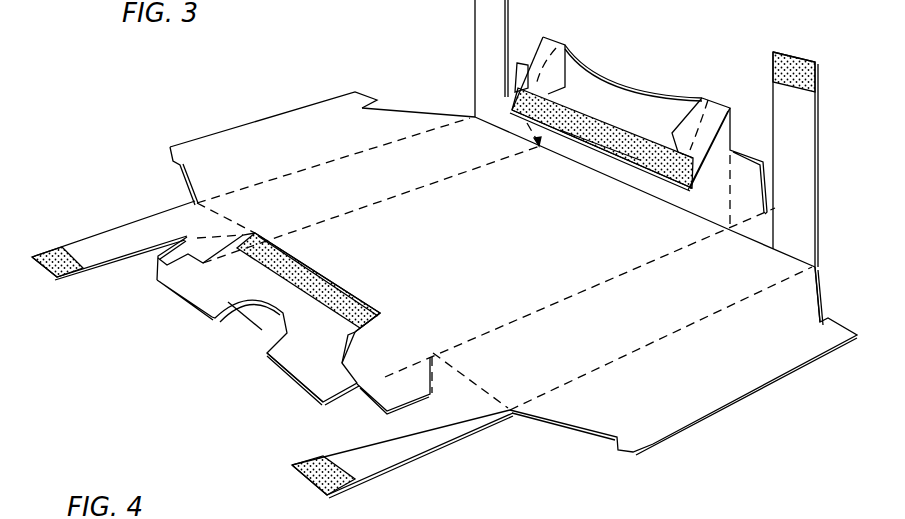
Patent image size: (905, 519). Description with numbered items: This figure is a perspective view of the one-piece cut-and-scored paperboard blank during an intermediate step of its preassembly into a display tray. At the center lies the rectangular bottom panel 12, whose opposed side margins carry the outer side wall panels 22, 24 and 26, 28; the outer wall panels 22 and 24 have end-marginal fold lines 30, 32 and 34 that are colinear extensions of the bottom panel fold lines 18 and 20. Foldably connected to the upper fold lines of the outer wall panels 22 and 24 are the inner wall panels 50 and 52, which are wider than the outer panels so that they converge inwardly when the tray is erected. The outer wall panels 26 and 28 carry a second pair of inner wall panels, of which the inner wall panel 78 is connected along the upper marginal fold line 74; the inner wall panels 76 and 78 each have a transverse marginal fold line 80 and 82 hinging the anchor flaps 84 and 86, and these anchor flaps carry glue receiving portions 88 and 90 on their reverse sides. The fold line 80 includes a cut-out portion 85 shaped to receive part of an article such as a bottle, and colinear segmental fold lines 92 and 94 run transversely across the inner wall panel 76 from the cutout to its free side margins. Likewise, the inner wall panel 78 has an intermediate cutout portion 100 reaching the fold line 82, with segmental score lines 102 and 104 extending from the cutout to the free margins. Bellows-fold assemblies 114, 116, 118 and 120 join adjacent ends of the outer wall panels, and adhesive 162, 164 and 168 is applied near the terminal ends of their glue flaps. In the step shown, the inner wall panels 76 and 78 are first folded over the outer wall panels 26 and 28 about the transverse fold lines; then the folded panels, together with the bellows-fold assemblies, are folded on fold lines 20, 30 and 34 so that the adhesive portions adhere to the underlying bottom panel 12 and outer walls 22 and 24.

The bottom panel 12 is at (463, 257).
The side margin fold line 18 is at (658, 201).
The side margin fold line 20 is at (410, 342).
The outer side wall panel 22 is at (585, 337).
The outer side wall panel 24 is at (353, 182).
The outer side wall panel 26 is at (702, 205).
The outer side wall panel 28 is at (365, 365).
The end-marginal fold line 30 is at (462, 378).
The end-marginal fold line 32 is at (748, 247).
The end-marginal fold line 34 is at (230, 229).
The inner wall panel 50 is at (690, 386).
The inner wall panel 52 is at (283, 152).
The upper marginal fold line 74 is at (262, 331).
The inner wall panel 76 is at (722, 113).
The inner wall panel 78 is at (303, 365).
The transverse marginal fold line 80 is at (536, 88).
The transverse marginal fold line 82 is at (249, 262).
The anchor flap 84 is at (548, 62).
The cut-out portion 85 is at (628, 90).
The anchor flap 86 is at (318, 277).
The glue receiving portion 88 is at (598, 133).
The glue receiving portion 90 is at (357, 311).
The segmental fold line 92 is at (566, 42).
The segmental fold line 94 is at (720, 100).
The intermediate cutout portion 100 is at (240, 321).
The segmental score line 102 is at (295, 381).
The segmental score line 104 is at (185, 292).
The bellows-fold assembly 114 is at (814, 219).
The bellows-fold assembly 116 is at (457, 441).
The bellows-fold assembly 118 is at (474, 76).
The bellows-fold assembly 120 is at (148, 219).
The adhesive 162 is at (796, 28).
The adhesive 164 is at (64, 268).
The adhesive 168 is at (302, 484).